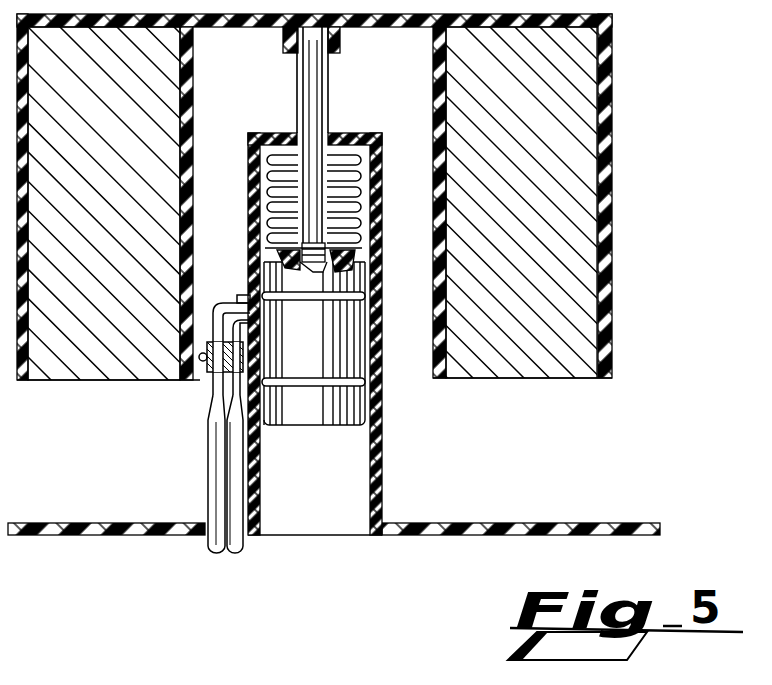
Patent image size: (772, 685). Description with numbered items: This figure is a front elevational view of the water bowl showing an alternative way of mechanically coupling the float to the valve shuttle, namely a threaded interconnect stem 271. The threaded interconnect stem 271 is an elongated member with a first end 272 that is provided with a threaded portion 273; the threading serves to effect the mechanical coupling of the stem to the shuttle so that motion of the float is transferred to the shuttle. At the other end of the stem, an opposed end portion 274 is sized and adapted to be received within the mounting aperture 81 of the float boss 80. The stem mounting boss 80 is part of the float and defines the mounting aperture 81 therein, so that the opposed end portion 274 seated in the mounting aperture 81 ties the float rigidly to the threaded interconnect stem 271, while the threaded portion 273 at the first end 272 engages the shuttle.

The stem mounting boss 80 is at (285, 44).
The mounting aperture 81 is at (297, 72).
The threaded interconnect stem 271 is at (313, 115).
The first end 272 is at (356, 262).
The threaded portion 273 is at (277, 252).
The opposed end portion 274 is at (327, 72).